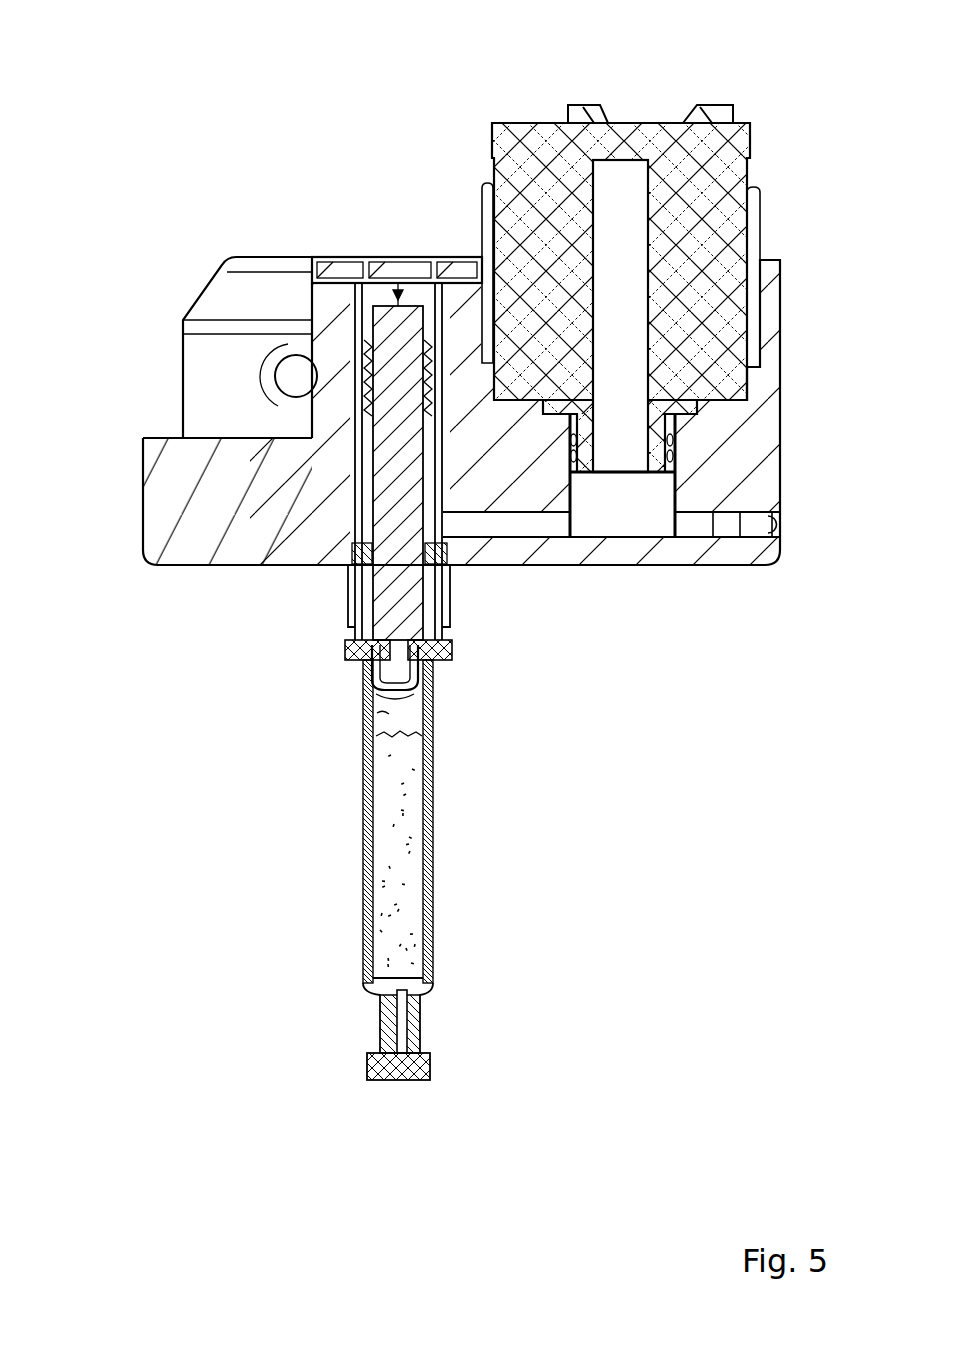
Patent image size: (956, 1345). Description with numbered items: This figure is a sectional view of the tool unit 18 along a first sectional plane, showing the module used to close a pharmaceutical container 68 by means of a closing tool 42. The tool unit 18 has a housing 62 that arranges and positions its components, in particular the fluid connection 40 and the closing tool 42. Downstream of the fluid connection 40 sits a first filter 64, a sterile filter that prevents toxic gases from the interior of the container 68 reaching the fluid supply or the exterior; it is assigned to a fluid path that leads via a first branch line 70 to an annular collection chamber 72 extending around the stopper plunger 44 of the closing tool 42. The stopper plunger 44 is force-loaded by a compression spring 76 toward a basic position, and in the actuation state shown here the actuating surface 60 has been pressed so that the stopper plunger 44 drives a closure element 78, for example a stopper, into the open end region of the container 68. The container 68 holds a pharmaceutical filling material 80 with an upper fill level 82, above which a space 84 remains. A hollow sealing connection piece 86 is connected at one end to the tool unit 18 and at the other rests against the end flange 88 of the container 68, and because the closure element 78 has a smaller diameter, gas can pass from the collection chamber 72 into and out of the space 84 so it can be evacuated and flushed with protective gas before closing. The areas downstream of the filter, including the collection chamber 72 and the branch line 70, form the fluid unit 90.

The tool unit 18 is at (212, 126).
The fluid connection 40 is at (752, 183).
The closing tool 42 is at (318, 600).
The stopper plunger 44 is at (353, 470).
The actuating surface 60 is at (397, 288).
The housing 62 is at (142, 490).
The first filter 64 is at (645, 143).
The pharmaceutical container 68 is at (433, 850).
The first branch line 70 is at (522, 525).
The collection chamber 72 is at (363, 518).
The compression spring 76 is at (310, 400).
The closure element 78 is at (420, 694).
The pharmaceutical filling material 80 is at (392, 840).
The fill level 82 is at (378, 737).
The space 84 is at (383, 713).
The sealing connection piece 86 is at (448, 605).
The end flange 88 is at (350, 663).
The fluid unit 90 is at (611, 589).